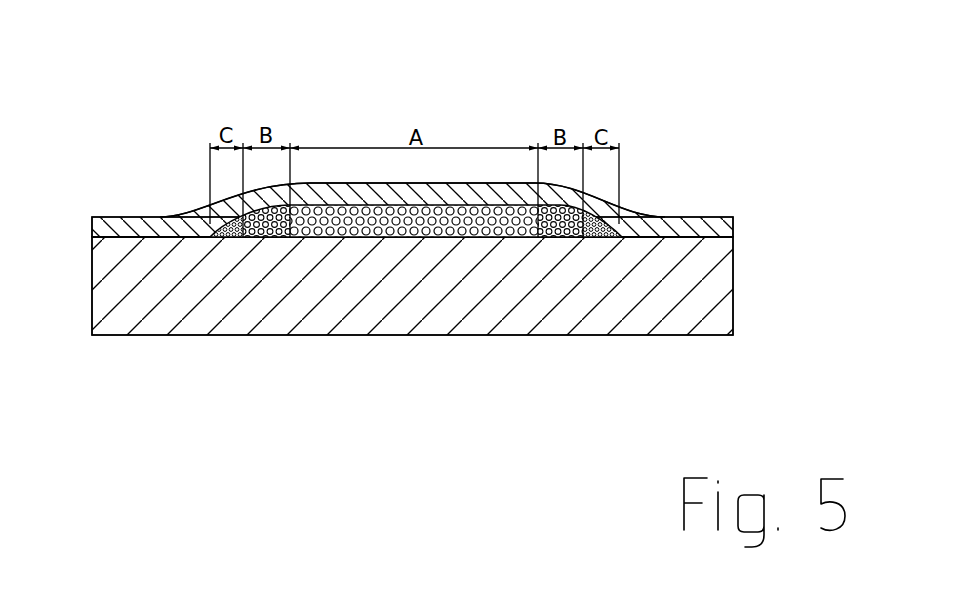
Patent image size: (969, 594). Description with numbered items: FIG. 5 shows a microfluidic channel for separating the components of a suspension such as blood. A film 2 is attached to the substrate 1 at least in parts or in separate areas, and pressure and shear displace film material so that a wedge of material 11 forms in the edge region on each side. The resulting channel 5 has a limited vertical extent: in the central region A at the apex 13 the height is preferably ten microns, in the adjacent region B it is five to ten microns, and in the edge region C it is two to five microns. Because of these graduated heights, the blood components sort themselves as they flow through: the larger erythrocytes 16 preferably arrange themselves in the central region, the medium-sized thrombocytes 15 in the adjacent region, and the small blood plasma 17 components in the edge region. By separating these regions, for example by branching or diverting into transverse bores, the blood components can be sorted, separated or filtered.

The substrate 1 is at (687, 308).
The film 2 is at (703, 230).
The channel 5 is at (600, 233).
The wedge of material 11 is at (200, 227).
The apex 13 is at (435, 182).
The thrombocytes 15 is at (267, 220).
The erythrocytes 16 is at (458, 217).
The blood plasma 17 is at (213, 224).